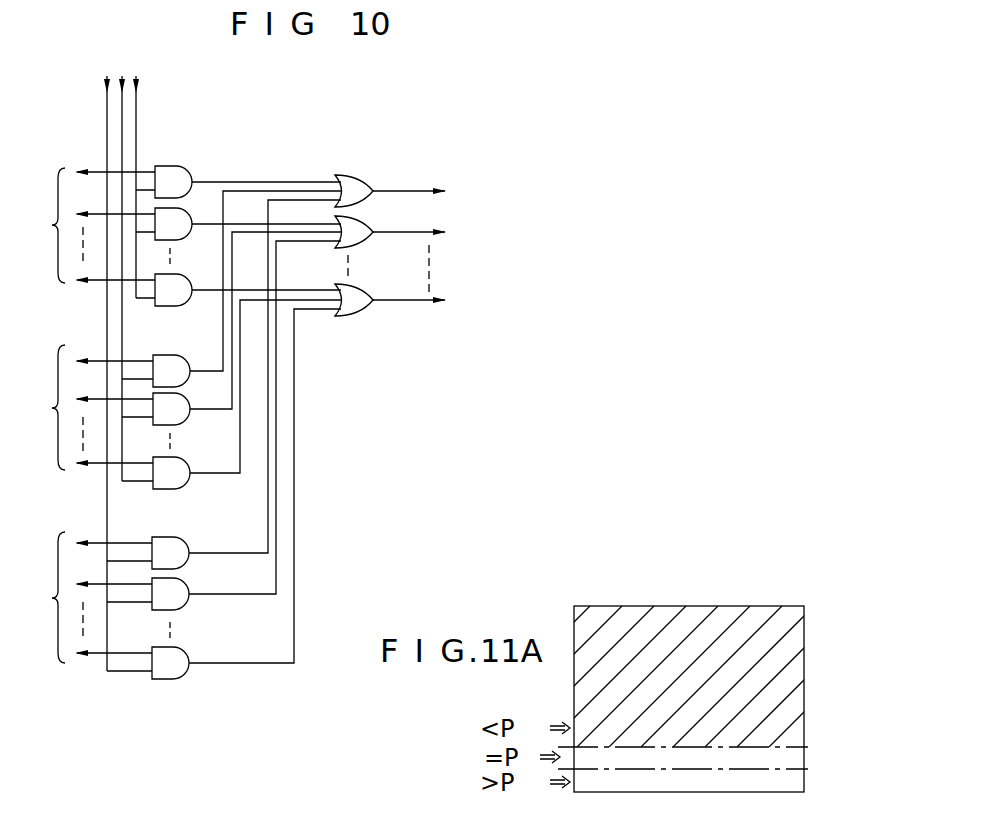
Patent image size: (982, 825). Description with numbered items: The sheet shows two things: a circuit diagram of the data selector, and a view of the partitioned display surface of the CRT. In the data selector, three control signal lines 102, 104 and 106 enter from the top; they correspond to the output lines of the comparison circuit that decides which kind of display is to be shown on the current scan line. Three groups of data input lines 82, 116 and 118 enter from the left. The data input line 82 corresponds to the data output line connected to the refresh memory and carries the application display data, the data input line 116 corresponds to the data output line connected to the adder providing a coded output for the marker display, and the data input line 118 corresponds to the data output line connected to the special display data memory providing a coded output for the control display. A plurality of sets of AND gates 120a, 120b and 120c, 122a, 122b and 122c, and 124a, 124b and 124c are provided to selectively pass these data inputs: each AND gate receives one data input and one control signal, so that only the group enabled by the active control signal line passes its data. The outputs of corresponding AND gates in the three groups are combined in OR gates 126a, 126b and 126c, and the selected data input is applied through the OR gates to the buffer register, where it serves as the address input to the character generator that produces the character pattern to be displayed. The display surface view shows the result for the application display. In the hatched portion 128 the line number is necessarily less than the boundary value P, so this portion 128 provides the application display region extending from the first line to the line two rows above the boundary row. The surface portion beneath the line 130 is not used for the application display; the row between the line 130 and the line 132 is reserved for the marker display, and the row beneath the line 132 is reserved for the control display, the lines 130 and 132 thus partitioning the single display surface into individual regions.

In FIG. 10, the data input line 82 is at (87, 225).
In FIG. 10, the control signal line 102 is at (137, 106).
In FIG. 10, the control signal line 104 is at (122, 94).
In FIG. 10, the control signal line 106 is at (107, 105).
In FIG. 10, the data input line 116 is at (84, 407).
In FIG. 10, the data input line 118 is at (83, 597).
In FIG. 10, the AND gate 120a is at (176, 166).
In FIG. 10, the AND gate 120b is at (189, 239).
In FIG. 10, the AND gate 120c is at (189, 305).
In FIG. 10, the AND gate 122a is at (170, 345).
In FIG. 10, the AND gate 122b is at (187, 424).
In FIG. 10, the AND gate 122c is at (184, 452).
In FIG. 10, the AND gate 124a is at (178, 537).
In FIG. 10, the AND gate 124b is at (179, 579).
In FIG. 10, the AND gate 124c is at (179, 648).
In FIG. 10, the OR gate 126a is at (354, 176).
In FIG. 10, the OR gate 126b is at (366, 223).
In FIG. 10, the OR gate 126c is at (362, 289).
In FIG. 11A, the hatched portion 128 is at (798, 715).
In FIG. 11A, the line 130 is at (808, 747).
In FIG. 11A, the line 132 is at (808, 769).